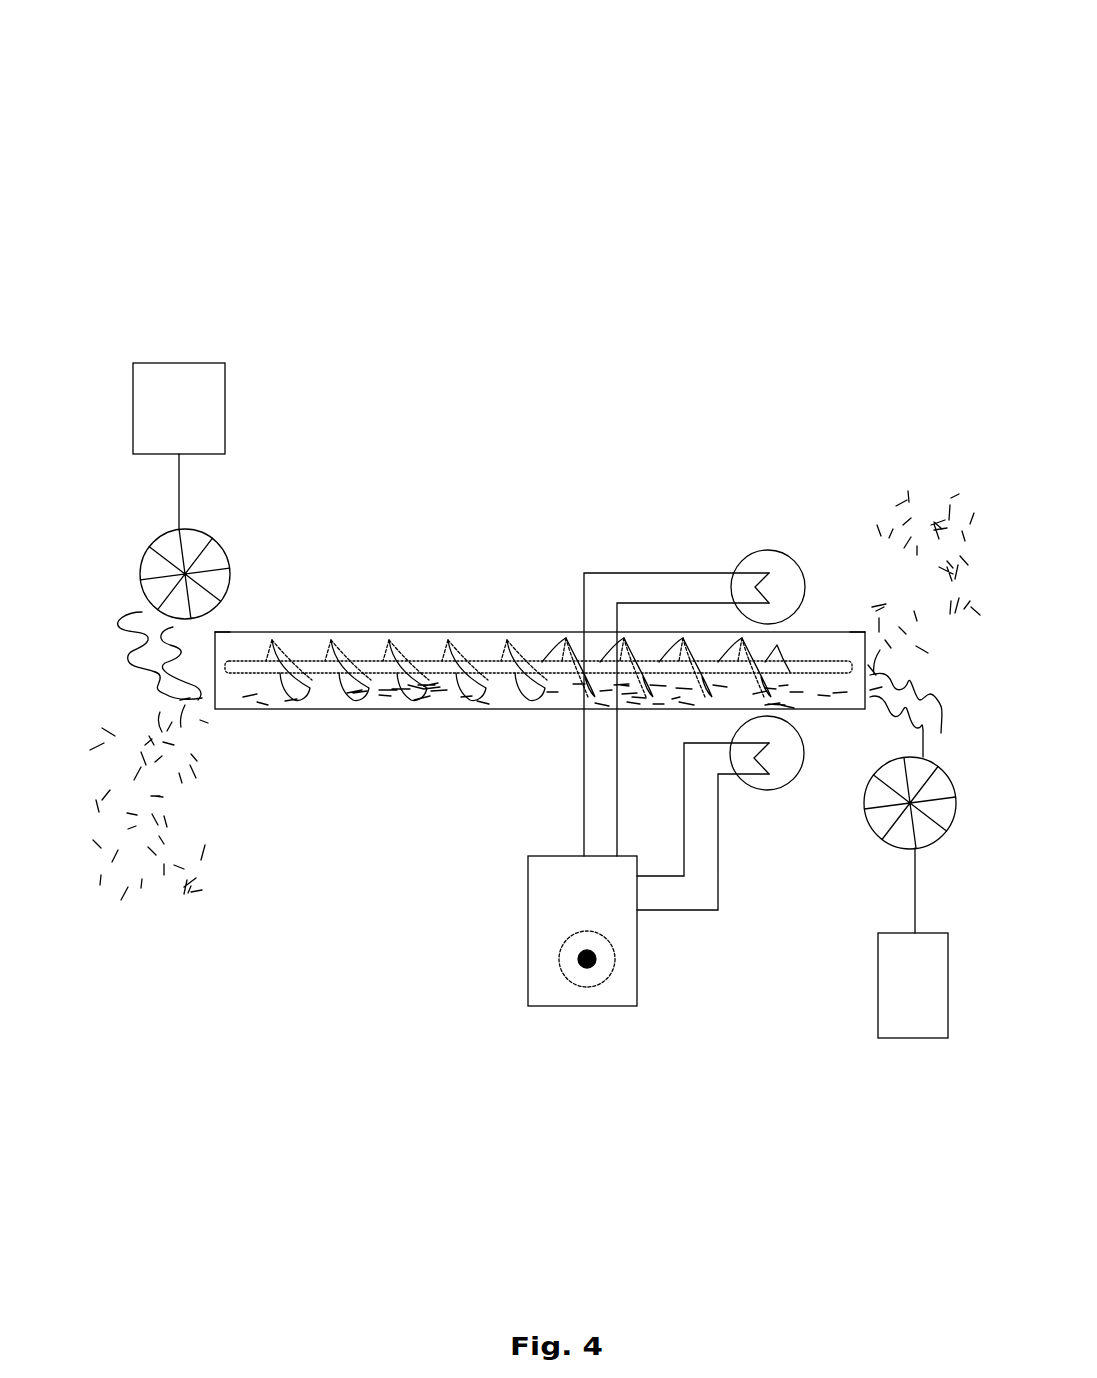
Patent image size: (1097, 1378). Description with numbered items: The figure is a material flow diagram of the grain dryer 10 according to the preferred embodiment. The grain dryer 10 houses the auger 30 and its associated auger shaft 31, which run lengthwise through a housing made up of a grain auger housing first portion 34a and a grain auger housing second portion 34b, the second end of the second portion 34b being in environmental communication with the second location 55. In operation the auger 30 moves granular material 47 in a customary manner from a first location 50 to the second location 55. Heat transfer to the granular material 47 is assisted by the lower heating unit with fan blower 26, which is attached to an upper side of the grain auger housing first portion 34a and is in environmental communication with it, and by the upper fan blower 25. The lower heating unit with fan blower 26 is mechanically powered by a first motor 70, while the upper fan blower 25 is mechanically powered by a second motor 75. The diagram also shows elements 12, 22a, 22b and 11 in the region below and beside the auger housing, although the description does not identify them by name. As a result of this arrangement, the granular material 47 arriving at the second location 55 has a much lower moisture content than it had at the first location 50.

The grain dryer 10 is at (138, 188).
The second motor 75 is at (205, 408).
The upper fan blower 25 is at (212, 583).
The second location 55 is at (148, 893).
The auger shaft 31 is at (360, 698).
The grain auger housing second portion 34b is at (382, 630).
The grain auger housing first portion 34a is at (827, 630).
The auger 30 is at (460, 650).
The granular material 47 is at (477, 703).
The heat transfer conduit 12 is at (672, 585).
The first heat exchanger 22a is at (775, 583).
The second heat exchanger 22b is at (762, 782).
The drive motor 11 is at (577, 975).
The first location 50 is at (940, 493).
The lower heating unit with fan blower 26 is at (872, 847).
The first motor 70 is at (905, 1022).